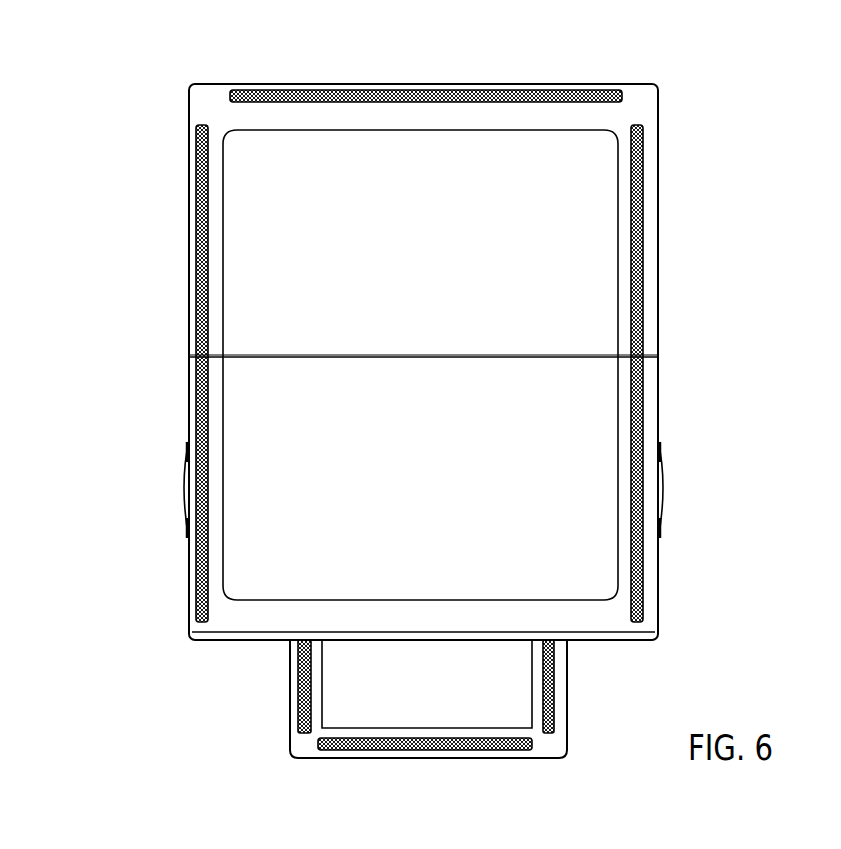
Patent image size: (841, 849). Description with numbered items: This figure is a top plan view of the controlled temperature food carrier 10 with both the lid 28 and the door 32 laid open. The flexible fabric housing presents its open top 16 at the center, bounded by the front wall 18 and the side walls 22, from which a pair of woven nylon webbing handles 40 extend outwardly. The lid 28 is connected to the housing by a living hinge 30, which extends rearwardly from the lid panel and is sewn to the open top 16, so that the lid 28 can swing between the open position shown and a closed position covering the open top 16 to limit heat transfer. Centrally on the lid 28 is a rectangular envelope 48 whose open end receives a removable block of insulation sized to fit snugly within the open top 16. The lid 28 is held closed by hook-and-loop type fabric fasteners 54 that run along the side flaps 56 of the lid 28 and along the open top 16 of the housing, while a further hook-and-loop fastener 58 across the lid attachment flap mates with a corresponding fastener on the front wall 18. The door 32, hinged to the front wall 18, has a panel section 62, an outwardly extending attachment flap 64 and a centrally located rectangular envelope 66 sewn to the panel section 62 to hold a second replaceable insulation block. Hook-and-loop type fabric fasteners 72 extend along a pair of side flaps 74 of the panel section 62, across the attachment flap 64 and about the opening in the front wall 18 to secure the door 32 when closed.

The controlled temperature food carrier 10 is at (156, 85).
The open top 16 is at (605, 420).
The front wall 18 is at (210, 641).
The side walls 22 is at (660, 570).
The lid 28 is at (662, 116).
The living hinge 30 is at (277, 357).
The door 32 is at (572, 660).
The handles 40 is at (183, 482).
The envelope 48 is at (603, 208).
The hook-and-loop type fabric fasteners 54 is at (643, 276).
The side flaps 56 is at (653, 238).
The hook-and-loop type fabric fastener 58 is at (497, 95).
The panel section 62 is at (290, 657).
The attachment flap 64 is at (367, 757).
The envelope 66 is at (517, 700).
The hook-and-loop type fabric fasteners 72 is at (553, 733).
The drawer cushion strip 74 is at (298, 690).